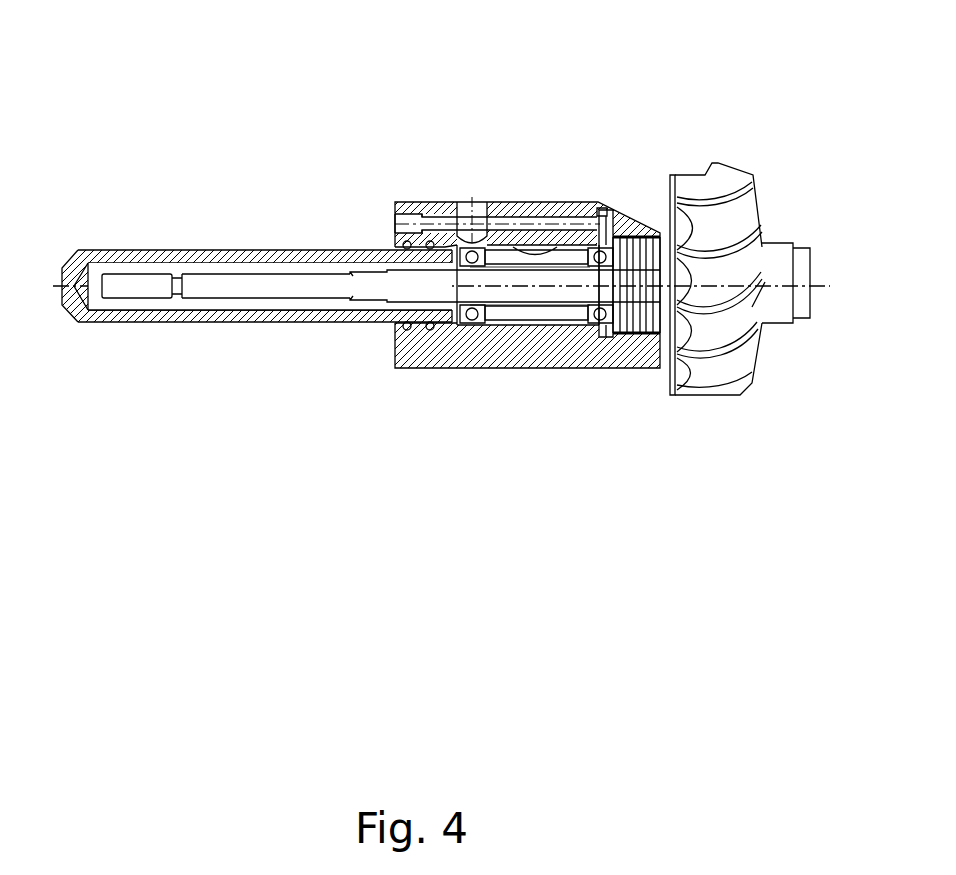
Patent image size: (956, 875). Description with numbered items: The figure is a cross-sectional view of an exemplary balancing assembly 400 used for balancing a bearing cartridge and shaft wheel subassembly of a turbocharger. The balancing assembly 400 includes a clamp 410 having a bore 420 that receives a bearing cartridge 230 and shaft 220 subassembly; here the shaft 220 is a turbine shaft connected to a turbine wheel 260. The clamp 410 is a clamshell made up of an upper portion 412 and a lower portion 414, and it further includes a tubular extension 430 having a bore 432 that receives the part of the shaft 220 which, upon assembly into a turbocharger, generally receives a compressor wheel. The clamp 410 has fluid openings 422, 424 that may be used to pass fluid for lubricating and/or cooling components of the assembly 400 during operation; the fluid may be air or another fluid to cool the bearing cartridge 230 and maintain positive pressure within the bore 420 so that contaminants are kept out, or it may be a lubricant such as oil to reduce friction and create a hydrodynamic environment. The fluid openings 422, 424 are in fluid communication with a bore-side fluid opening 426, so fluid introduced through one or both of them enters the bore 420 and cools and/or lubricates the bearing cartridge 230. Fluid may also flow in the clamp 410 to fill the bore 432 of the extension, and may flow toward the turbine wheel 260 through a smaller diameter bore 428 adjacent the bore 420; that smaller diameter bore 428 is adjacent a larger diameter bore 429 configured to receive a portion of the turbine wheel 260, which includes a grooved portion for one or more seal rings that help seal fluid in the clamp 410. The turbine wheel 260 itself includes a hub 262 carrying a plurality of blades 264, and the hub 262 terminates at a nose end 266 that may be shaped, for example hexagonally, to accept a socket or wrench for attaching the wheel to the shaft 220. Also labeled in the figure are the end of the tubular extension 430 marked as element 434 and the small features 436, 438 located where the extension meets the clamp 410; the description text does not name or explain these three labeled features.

The balancing assembly 400 is at (327, 40).
The clamp 410 is at (365, 146).
The upper portion 412 is at (443, 202).
The lower portion 414 is at (455, 368).
The bore 420 is at (472, 323).
The fluid opening 422 is at (488, 212).
The fluid opening 424 is at (395, 221).
The bore-side fluid opening 426 is at (603, 212).
The smaller diameter bore 428 is at (612, 337).
The larger diameter bore 429 is at (637, 333).
The tubular extension 430 is at (260, 250).
The bore 432 is at (217, 310).
The tube tip 434 is at (98, 250).
The lower o-ring seals 436 is at (418, 326).
The upper o-ring seals 438 is at (403, 243).
The shaft 220 is at (561, 295).
The bearing cartridge 230 is at (512, 320).
The turbine wheel 260 is at (739, 116).
The hub 262 is at (788, 281).
The blades 264 is at (734, 231).
The nose end 266 is at (808, 328).